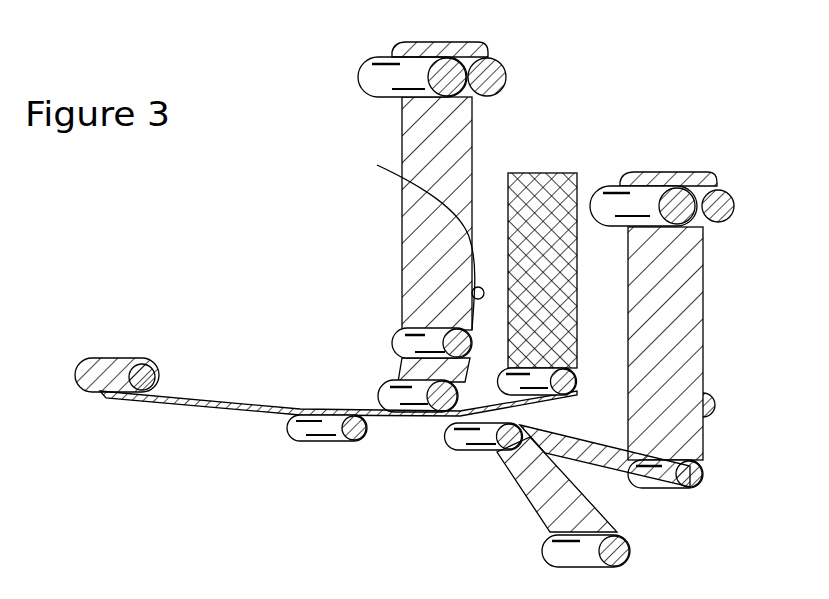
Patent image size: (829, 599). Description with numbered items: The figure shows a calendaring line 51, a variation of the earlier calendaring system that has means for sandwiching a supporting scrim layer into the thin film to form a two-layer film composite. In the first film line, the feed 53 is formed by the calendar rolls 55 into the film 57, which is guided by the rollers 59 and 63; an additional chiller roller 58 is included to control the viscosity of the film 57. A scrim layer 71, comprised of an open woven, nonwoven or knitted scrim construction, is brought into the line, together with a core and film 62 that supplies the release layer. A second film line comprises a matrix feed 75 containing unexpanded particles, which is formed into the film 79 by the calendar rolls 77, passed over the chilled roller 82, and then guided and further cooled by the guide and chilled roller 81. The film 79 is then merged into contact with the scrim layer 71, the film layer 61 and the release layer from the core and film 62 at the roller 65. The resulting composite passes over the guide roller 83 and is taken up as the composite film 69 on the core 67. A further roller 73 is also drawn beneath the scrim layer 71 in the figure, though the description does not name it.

The calendaring line 51 is at (578, 106).
The feed 53 is at (660, 177).
The calendar rolls 55 is at (732, 197).
The film 57 is at (672, 312).
The chiller roller 58 is at (713, 402).
The roller 59 is at (680, 470).
The film layer 61 is at (543, 453).
The core and film 62 is at (527, 482).
The roller 63 is at (473, 437).
The roller 65 is at (397, 385).
The core 67 is at (153, 358).
The composite film 69 is at (83, 392).
The scrim layer 71 is at (523, 173).
The roller 73 is at (560, 390).
The matrix feed 75 is at (392, 47).
The calendar rolls 77 is at (470, 85).
The film 79 is at (427, 207).
The guide and chilled roller 81 is at (408, 332).
The chilled roller 82 is at (405, 235).
The guide roller 83 is at (317, 430).